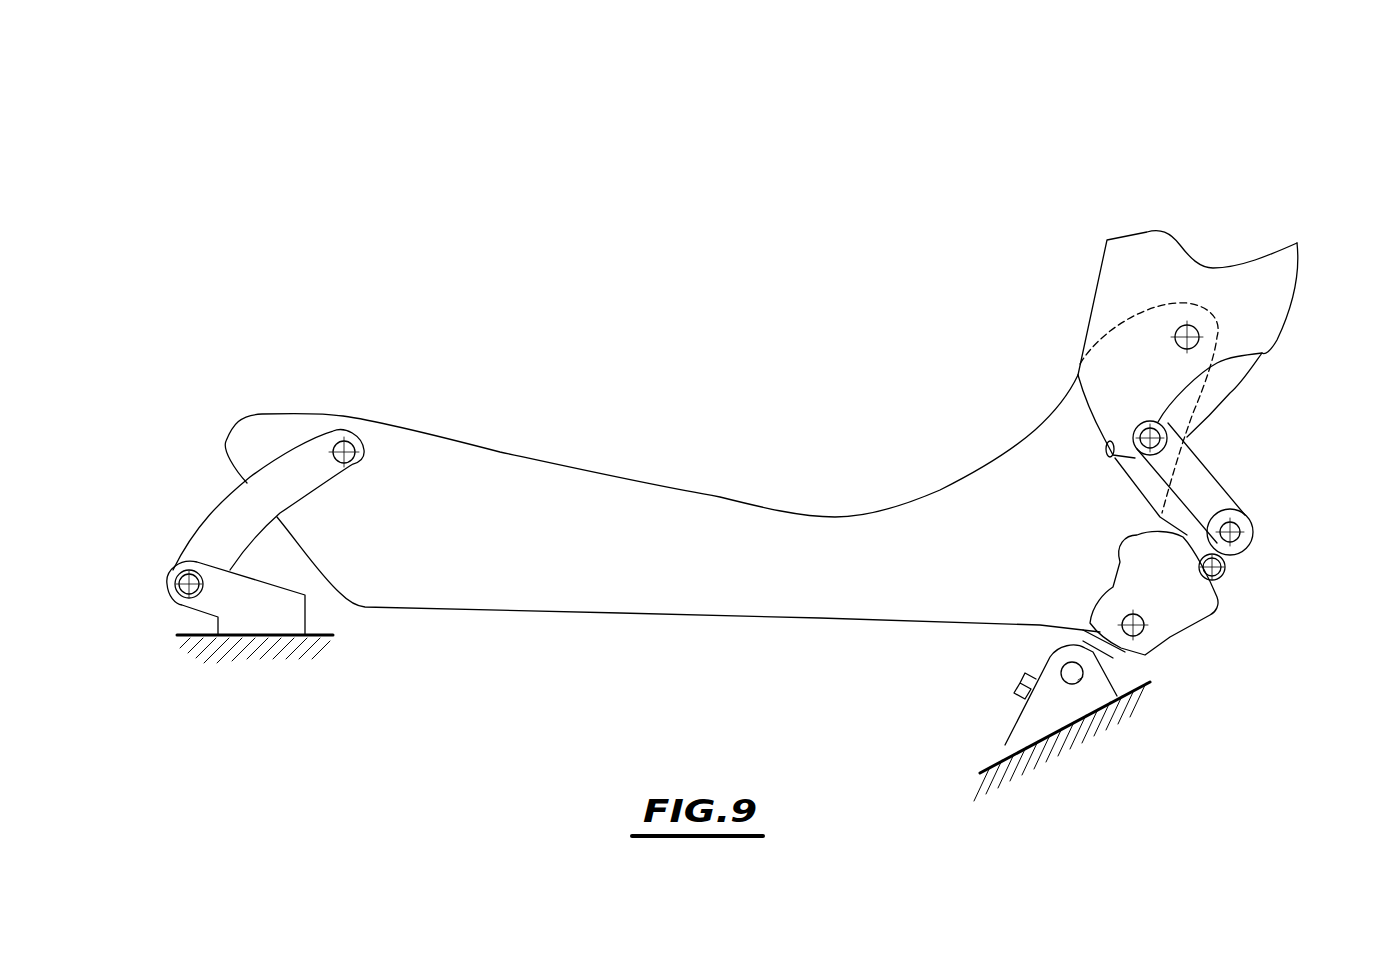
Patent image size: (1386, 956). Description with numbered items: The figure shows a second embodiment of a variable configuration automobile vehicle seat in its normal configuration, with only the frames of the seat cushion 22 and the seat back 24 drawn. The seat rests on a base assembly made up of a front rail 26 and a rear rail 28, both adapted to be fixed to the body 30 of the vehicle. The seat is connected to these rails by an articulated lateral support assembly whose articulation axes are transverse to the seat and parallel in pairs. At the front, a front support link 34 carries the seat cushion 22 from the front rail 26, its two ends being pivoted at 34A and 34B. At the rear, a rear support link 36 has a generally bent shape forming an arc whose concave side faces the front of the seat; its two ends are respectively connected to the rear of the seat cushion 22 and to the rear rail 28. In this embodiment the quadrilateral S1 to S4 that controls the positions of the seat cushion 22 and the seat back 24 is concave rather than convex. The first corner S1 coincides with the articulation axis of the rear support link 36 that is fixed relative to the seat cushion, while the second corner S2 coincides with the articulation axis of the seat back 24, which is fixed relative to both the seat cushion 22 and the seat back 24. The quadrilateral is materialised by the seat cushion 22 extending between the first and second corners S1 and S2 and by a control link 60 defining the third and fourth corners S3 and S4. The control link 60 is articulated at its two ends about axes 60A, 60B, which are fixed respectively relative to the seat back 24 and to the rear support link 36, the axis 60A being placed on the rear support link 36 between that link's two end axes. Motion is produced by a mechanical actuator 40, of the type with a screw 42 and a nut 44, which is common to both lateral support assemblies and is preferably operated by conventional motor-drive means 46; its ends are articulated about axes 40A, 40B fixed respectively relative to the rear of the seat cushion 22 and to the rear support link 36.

The seat cushion 22 is at (649, 514).
The seat back 24 is at (1105, 237).
The front rail 26 is at (255, 607).
The rear rail 28 is at (1050, 705).
The body 30 is at (320, 626).
The front support link 34 is at (237, 523).
The upper pivot of support link 34A is at (357, 443).
The lower pivot of support link 34B is at (175, 595).
The rear support link 36 is at (1233, 556).
The actuator 40 is at (1210, 620).
The articulation axis of the actuator 40A is at (1140, 630).
The articulation axis of the actuator 40B is at (1227, 577).
The screw 42 is at (1100, 627).
The nut 44 is at (1150, 648).
The motor-drive means 46 is at (1127, 558).
The control link 60 is at (1205, 489).
The articulation axis of the control link 60A is at (1253, 519).
The articulation axis of the control link 60B is at (1262, 353).
The first corner S1 is at (1103, 450).
The second corner S2 is at (1193, 330).
The third corner S3 is at (1240, 513).
The fourth corner S4 is at (1162, 438).